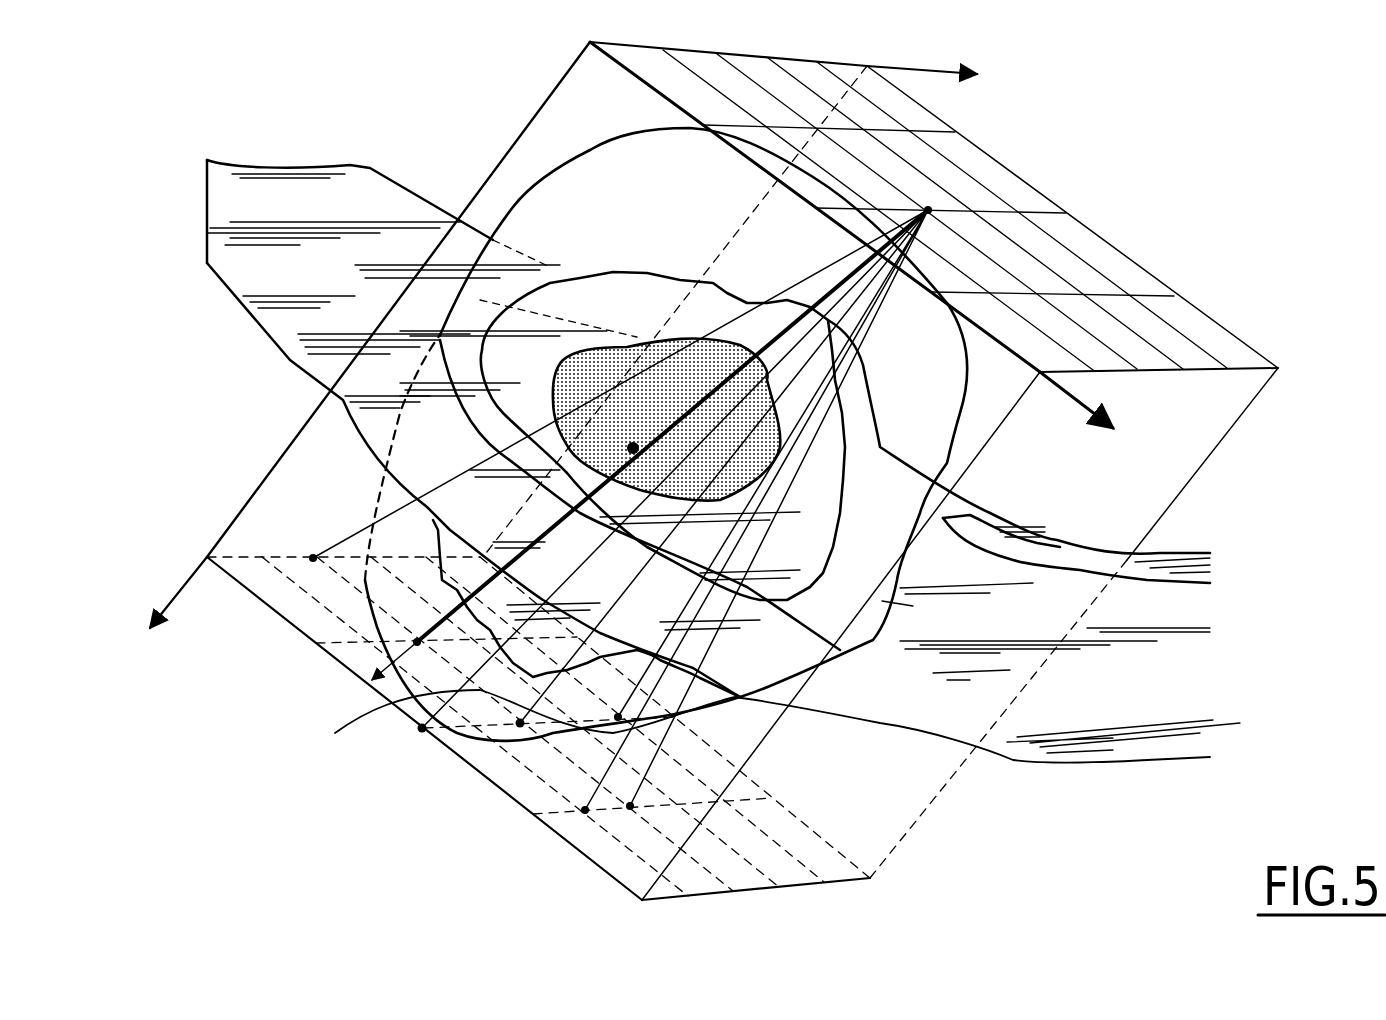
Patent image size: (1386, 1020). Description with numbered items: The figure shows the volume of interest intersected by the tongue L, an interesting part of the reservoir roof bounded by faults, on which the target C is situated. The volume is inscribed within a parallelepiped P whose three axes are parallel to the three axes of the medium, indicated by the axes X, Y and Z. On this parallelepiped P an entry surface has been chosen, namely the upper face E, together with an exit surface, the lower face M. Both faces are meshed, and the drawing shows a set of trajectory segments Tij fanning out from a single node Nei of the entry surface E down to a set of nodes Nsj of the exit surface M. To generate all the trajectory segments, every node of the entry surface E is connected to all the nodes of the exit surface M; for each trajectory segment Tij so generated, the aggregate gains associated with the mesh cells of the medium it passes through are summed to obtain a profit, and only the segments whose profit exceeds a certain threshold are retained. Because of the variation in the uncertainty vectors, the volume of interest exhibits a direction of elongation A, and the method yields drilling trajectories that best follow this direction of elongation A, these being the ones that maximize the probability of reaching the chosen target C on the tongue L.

The upper face E is at (1212, 344).
The lower face M is at (518, 792).
The parallelepiped P is at (897, 858).
The axis Z is at (161, 592).
The axis Y is at (940, 69).
The axis X is at (1095, 412).
The tongue L is at (378, 198).
The node of the entry surface Nei is at (646, 508).
The direction of elongation A is at (631, 458).
The target C is at (600, 443).
The trajectory segment Tij is at (354, 743).
The node of the exit surface Nsj is at (546, 749).